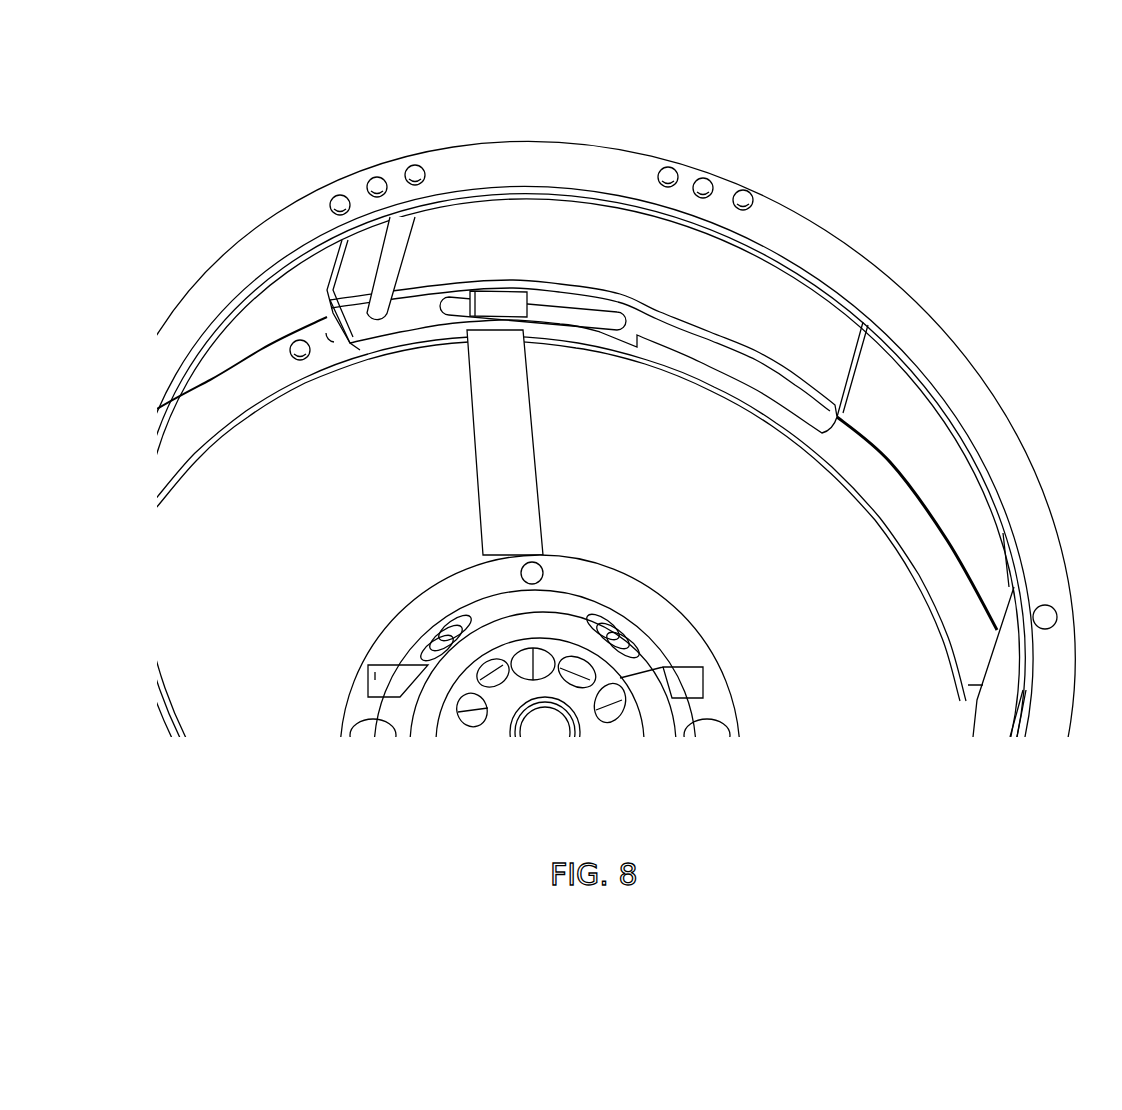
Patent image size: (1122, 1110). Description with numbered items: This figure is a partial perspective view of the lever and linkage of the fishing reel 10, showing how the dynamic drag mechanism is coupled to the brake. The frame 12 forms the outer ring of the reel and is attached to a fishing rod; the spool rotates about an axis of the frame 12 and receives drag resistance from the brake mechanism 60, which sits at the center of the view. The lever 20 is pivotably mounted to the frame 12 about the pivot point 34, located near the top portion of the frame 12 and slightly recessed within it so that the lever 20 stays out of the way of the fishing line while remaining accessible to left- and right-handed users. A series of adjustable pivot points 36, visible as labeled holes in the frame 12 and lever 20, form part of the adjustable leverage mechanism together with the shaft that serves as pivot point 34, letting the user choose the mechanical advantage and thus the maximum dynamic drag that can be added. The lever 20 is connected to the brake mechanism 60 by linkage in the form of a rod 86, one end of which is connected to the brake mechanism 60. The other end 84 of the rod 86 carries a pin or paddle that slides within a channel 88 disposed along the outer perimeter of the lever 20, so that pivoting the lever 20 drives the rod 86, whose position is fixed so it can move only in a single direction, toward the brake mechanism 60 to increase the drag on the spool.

The fishing reel 10 is at (922, 137).
The frame 12 is at (1023, 442).
The lever 20 is at (857, 365).
The pivot point 34 is at (407, 243).
The adjustable pivot points 36 is at (416, 166).
The brake mechanism 60 is at (681, 597).
The other end of the rod 84 is at (513, 294).
The rod 86 is at (537, 440).
The channel 88 is at (585, 305).